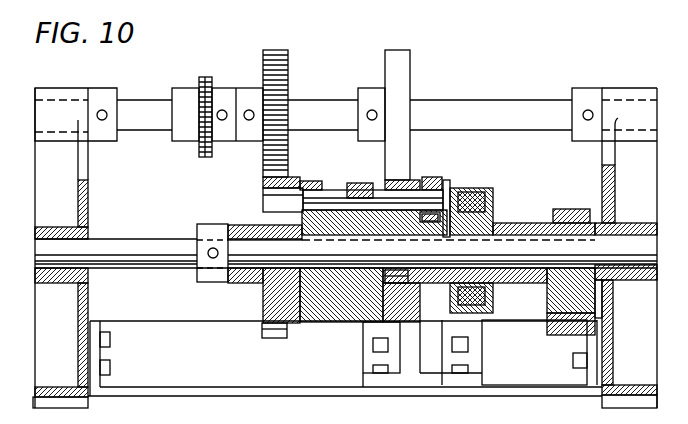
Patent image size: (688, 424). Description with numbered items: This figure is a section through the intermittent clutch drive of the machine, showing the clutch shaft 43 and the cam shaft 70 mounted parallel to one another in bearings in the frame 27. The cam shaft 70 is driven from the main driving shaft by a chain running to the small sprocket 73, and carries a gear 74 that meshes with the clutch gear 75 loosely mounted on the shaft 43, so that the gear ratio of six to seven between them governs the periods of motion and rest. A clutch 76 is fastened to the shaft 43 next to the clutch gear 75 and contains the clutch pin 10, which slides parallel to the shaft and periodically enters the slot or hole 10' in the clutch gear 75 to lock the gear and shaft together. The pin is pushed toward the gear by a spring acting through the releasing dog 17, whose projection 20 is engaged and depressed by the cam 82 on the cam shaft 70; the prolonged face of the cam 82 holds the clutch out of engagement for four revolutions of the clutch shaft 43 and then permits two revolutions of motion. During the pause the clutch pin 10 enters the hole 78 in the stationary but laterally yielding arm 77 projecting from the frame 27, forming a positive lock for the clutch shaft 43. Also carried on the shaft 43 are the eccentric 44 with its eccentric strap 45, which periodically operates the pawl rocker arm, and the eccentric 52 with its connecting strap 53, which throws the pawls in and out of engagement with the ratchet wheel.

The clutch pin 10 is at (373, 176).
The slot or hole 10' is at (261, 195).
The releasing dog 17 is at (402, 322).
The projection of the dog 20 is at (386, 183).
The frame 27 is at (90, 189).
The clutch shaft 43 is at (120, 250).
The eccentric 44 is at (494, 202).
The eccentric strap 45 is at (567, 335).
The eccentric 52 is at (548, 315).
The connecting strap 53 is at (494, 302).
The cam shaft 70 is at (450, 105).
The small sprocket 73 is at (207, 77).
The gear 74 is at (288, 58).
The clutch gear 75 is at (275, 302).
The clutch 76 is at (335, 300).
The laterally yielding arm 77 is at (428, 177).
The hole 78 is at (448, 180).
The cam 82 is at (400, 66).